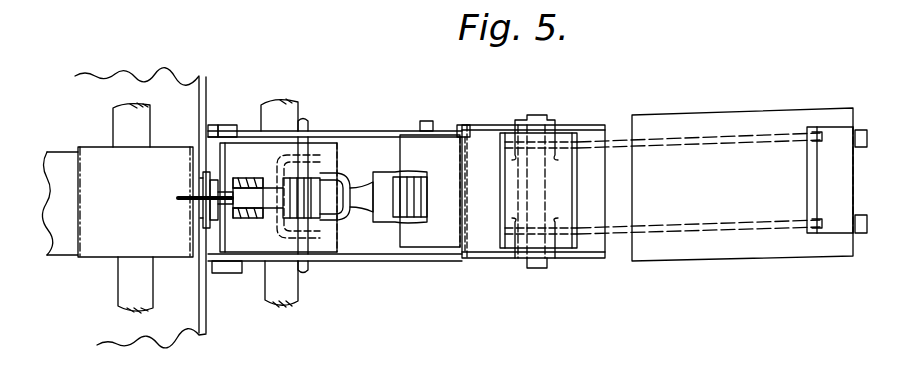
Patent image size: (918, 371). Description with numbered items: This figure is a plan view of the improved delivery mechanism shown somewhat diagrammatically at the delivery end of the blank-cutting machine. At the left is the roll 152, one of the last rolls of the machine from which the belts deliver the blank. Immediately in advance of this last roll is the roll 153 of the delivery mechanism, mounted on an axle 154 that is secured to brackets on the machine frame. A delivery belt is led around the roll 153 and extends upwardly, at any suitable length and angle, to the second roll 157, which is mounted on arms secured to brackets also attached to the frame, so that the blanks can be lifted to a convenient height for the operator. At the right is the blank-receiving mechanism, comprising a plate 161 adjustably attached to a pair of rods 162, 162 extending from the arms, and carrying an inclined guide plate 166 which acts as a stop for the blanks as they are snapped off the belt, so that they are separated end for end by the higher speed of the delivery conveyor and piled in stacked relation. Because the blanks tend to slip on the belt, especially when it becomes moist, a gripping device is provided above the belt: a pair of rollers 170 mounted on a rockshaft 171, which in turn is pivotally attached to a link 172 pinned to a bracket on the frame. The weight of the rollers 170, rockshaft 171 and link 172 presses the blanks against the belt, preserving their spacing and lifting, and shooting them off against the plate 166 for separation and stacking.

The roll 152 is at (89, 147).
The roll 153 is at (328, 262).
The axle 154 is at (290, 285).
The second roll 157 is at (567, 245).
The plate 161 is at (773, 245).
The rods 162 is at (617, 138).
The inclined guide plate 166 is at (832, 135).
The rollers 170 is at (282, 190).
The rockshaft 171 is at (363, 183).
The link 172 is at (278, 217).